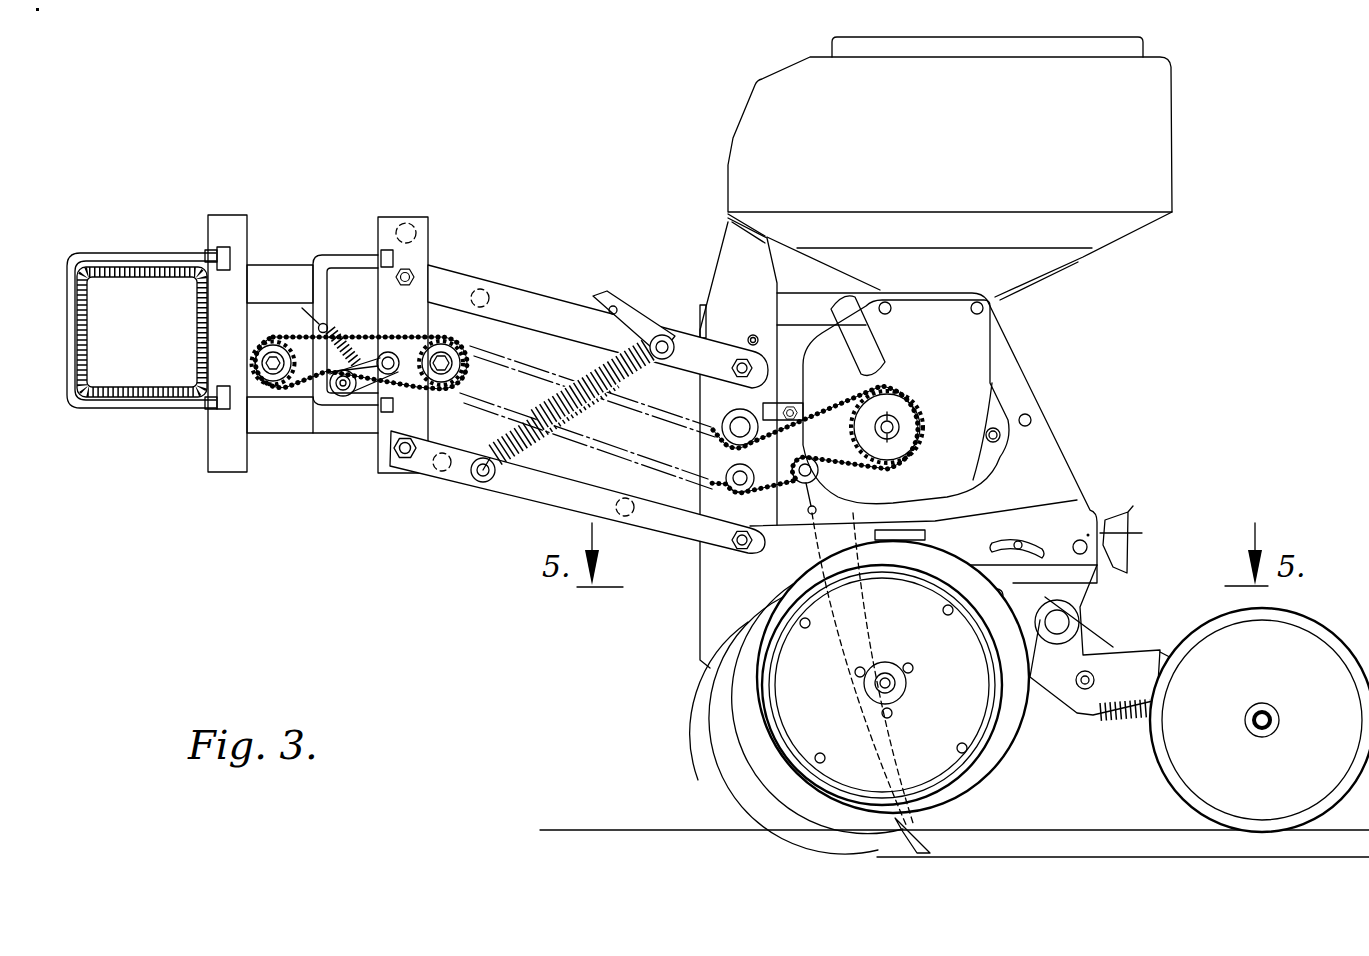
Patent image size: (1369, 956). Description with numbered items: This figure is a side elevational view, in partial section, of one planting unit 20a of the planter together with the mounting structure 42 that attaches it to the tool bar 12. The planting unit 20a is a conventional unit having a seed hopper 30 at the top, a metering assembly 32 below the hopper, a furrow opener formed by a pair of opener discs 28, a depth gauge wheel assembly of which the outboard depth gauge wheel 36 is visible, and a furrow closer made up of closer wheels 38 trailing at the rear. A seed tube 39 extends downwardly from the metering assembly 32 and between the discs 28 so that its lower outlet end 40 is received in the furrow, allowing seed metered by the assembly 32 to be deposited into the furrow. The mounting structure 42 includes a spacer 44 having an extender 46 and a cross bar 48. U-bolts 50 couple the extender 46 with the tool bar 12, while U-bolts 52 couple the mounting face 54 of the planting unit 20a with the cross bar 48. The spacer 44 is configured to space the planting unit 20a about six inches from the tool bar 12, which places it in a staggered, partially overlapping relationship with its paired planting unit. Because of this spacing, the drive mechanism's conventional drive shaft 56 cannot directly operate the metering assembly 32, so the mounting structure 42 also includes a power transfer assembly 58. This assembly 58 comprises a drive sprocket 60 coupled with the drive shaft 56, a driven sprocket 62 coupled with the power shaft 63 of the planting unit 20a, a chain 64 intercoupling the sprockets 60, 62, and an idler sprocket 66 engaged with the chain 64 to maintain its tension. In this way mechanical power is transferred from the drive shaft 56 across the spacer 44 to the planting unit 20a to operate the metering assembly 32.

The tool bar 12 is at (130, 398).
The planting unit 20a is at (638, 641).
The opener discs 28 is at (780, 818).
The seed hopper 30 is at (1148, 156).
The metering assembly 32 is at (1014, 362).
The outboard depth gauge wheel 36 is at (991, 770).
The closer wheels 38 is at (1303, 628).
The seed tube 39 is at (862, 600).
The lower outlet end 40 is at (912, 812).
The mounting structure 42 is at (324, 225).
The spacer 44 is at (284, 250).
The extender 46 is at (313, 430).
The cross bar 48 is at (346, 293).
The U-bolts 50 is at (143, 252).
The U-bolts 52 is at (355, 405).
The mounting face 54 is at (366, 222).
The drive shaft 56 is at (265, 363).
The power transfer assembly 58 is at (240, 330).
The drive sprocket 60 is at (260, 355).
The driven sprocket 62 is at (460, 363).
The power shaft 63 is at (440, 378).
The chain 64 is at (386, 338).
The idler sprocket 66 is at (335, 392).